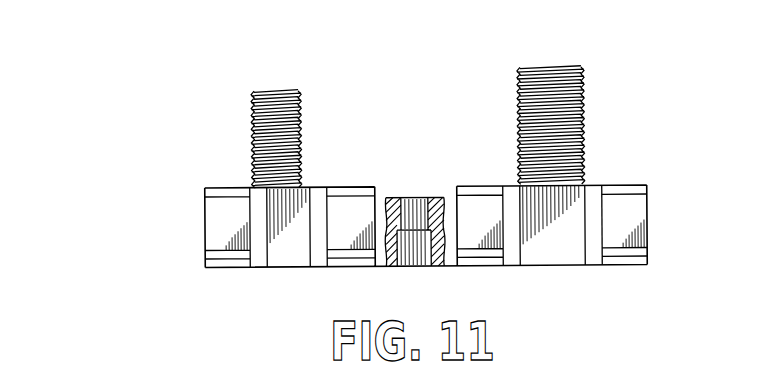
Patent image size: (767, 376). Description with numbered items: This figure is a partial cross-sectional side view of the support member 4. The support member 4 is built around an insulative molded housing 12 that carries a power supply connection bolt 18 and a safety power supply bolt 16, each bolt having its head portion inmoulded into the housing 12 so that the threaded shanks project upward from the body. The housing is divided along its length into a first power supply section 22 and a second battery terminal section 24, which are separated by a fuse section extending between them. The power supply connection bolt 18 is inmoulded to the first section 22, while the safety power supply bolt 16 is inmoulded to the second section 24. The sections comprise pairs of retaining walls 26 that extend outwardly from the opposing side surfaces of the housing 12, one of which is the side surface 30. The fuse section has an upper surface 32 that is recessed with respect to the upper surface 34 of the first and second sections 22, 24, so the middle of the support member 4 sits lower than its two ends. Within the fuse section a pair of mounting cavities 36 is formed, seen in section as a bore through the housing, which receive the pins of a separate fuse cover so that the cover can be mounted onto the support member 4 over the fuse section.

The support member 4 is at (636, 80).
The insulative molded housing 12 is at (647, 206).
The safety power supply bolt 16 is at (251, 133).
The power supply connection bolt 18 is at (517, 82).
The first power supply section 22 is at (562, 245).
The second battery terminal section 24 is at (215, 241).
The retaining walls 26 is at (593, 253).
The side surface 30 is at (346, 208).
The upper surface of fuse section 32 is at (433, 197).
The upper surface of sections 34 is at (627, 186).
The mounting cavities 36 is at (422, 252).